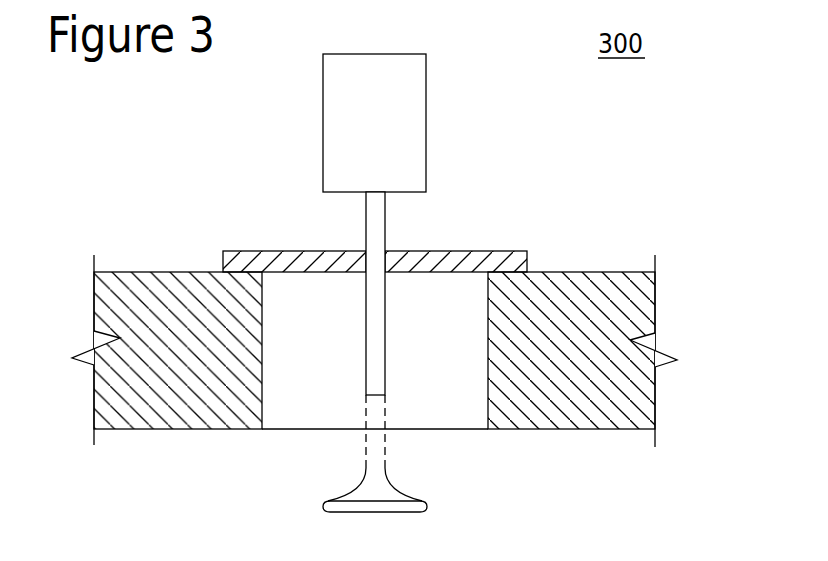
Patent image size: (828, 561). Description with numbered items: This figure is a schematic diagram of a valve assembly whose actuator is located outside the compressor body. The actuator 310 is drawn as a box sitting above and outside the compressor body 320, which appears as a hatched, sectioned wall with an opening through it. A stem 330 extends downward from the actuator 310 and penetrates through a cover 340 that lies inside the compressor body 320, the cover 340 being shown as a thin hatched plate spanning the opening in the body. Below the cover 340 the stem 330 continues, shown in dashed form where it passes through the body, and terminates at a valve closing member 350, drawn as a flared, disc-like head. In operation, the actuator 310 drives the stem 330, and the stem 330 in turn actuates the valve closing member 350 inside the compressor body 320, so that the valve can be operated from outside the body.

The actuator 310 is at (402, 137).
The compressor body 320 is at (602, 293).
The stem 330 is at (384, 216).
The cover 340 is at (505, 263).
The valve closing member 350 is at (421, 505).